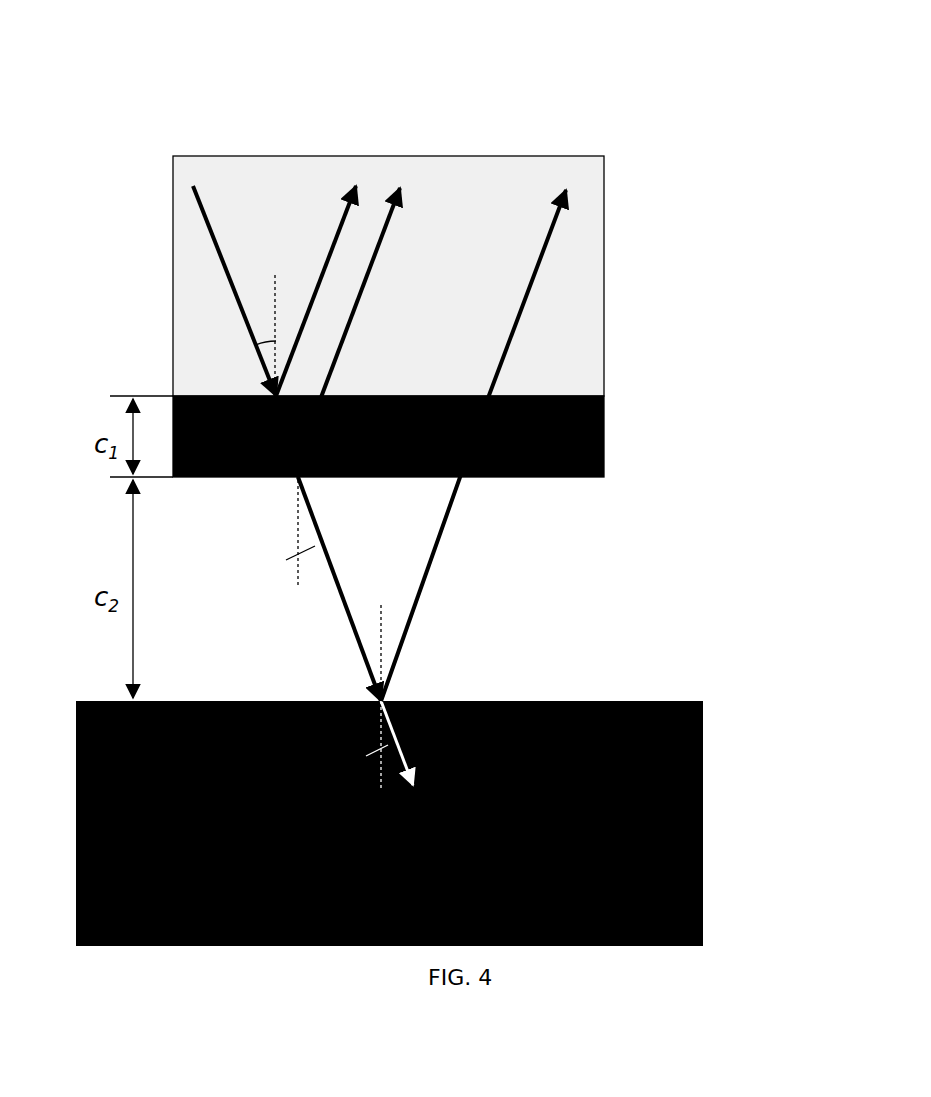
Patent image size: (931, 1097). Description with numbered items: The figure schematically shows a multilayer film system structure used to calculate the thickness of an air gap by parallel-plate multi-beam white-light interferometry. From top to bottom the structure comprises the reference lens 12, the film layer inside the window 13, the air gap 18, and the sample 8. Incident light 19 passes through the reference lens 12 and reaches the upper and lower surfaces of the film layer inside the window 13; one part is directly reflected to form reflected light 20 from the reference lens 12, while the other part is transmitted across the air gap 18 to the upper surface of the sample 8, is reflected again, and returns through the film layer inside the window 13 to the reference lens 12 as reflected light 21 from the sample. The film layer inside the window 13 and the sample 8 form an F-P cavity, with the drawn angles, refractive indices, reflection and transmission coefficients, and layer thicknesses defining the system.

The sample 8 is at (695, 817).
The reference lens 12 is at (550, 270).
The film layer inside the window 13 is at (550, 432).
The air gap 18 is at (550, 592).
The incident light 19 is at (185, 178).
The reflected light from the reference lens 20 is at (392, 180).
The reflected light from the sample 21 is at (558, 182).